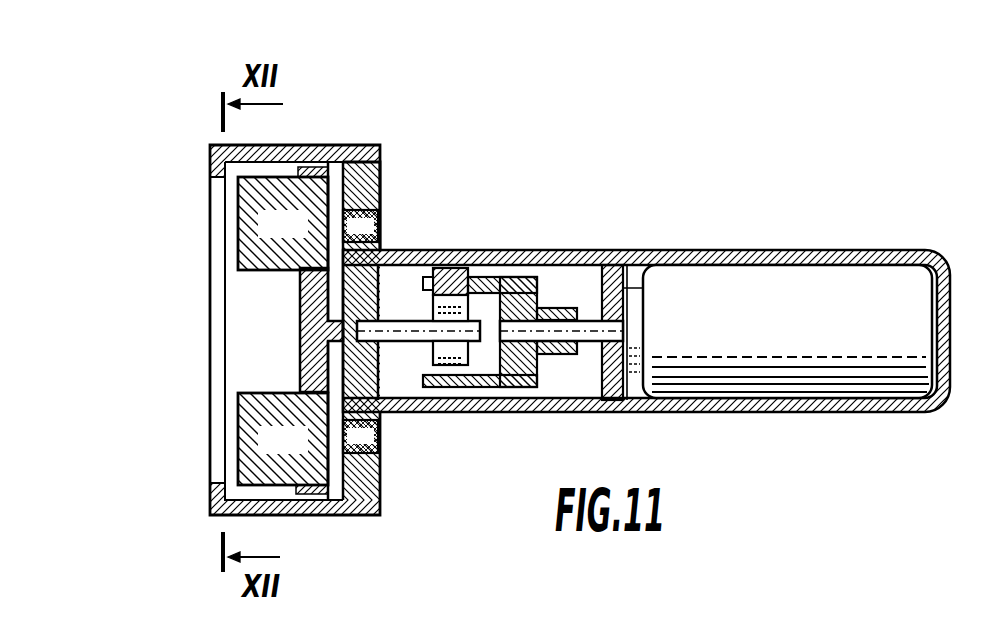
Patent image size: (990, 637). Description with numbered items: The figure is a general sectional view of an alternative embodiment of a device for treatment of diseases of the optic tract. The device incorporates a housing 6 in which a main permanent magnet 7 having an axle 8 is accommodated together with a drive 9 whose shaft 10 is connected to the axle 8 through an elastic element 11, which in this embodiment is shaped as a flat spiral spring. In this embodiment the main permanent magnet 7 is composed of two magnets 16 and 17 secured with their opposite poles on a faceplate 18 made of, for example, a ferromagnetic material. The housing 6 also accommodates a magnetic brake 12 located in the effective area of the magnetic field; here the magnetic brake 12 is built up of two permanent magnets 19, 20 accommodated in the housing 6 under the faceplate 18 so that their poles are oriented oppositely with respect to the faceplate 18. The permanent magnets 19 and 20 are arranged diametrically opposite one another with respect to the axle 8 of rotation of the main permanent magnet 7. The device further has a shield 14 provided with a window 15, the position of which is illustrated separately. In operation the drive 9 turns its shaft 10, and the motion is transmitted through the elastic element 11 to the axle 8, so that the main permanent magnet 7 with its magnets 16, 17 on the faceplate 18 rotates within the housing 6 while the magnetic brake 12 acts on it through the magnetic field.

The housing 6 is at (622, 268).
The main permanent magnet 7 is at (238, 430).
The axle 8 is at (394, 342).
The drive 9 is at (698, 273).
The shaft 10 is at (588, 333).
The elastic element 11 is at (451, 268).
The magnetic brake 12 is at (380, 225).
The shield 14 is at (334, 506).
The window 15 is at (217, 245).
The magnet 16 is at (284, 245).
The magnet 17 is at (284, 468).
The faceplate 18 is at (305, 353).
The permanent magnet 19 is at (380, 190).
The permanent magnet 20 is at (380, 441).